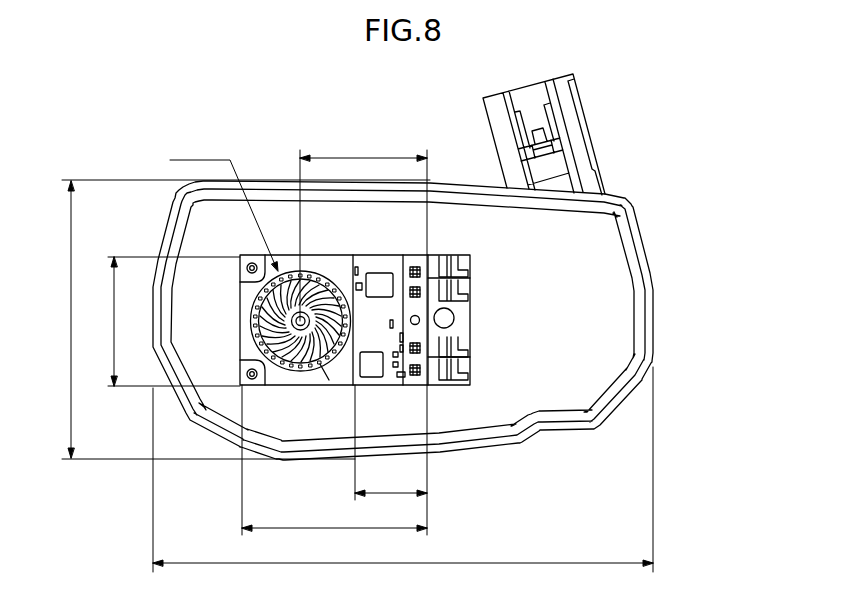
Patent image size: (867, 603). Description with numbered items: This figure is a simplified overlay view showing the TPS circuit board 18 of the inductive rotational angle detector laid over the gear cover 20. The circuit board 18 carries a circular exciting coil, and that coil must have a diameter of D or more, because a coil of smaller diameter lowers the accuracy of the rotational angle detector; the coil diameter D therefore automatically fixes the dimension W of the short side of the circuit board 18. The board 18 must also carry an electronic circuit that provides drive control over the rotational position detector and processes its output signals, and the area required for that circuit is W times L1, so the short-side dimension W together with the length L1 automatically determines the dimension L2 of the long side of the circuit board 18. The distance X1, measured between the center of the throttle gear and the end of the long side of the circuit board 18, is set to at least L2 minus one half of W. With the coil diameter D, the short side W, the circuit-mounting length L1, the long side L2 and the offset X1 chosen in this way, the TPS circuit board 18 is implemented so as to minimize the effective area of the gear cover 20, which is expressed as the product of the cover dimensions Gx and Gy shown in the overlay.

The TPS circuit board 18 is at (297, 264).
The gear cover 20 is at (585, 243).
The distance X1 is at (363, 335).
The dimension L1 is at (391, 442).
The dimension L2 is at (334, 460).
The dimension Gx is at (403, 469).
The dimension Gy is at (236, 319).
The dimension W is at (161, 321).
The diameter D is at (224, 203).